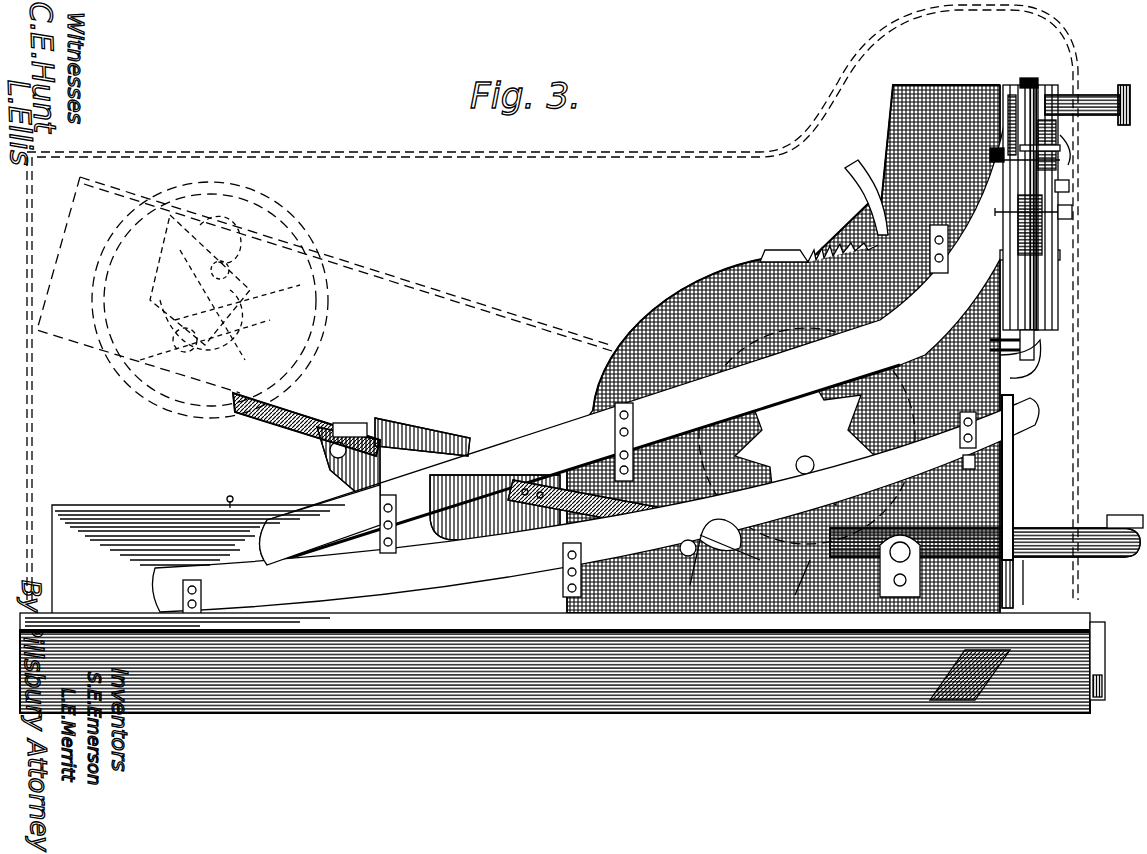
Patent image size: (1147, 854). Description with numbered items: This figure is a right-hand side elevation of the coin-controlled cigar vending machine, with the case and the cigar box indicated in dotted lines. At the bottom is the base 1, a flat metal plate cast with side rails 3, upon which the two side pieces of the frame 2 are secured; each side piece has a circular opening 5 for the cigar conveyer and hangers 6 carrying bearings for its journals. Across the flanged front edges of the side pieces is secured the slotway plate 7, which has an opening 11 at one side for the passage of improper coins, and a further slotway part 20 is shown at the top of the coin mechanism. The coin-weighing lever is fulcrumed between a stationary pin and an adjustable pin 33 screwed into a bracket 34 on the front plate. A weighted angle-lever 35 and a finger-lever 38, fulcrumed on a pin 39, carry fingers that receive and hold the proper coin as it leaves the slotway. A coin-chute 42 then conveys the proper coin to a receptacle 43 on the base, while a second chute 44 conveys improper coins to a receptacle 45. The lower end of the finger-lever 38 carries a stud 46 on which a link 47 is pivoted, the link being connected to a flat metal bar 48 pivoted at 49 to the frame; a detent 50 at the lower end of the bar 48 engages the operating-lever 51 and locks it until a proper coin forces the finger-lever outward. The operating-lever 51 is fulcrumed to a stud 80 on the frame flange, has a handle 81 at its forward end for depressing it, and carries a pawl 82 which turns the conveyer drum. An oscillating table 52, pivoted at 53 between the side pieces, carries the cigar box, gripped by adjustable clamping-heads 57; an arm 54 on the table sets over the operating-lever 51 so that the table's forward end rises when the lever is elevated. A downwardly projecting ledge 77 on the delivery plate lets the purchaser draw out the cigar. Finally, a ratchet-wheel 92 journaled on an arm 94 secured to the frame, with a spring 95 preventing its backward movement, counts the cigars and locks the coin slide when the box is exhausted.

The base 1 is at (1050, 614).
The frame 2 is at (705, 285).
The side rails 3 is at (555, 671).
The circular opening 5 is at (795, 595).
The hangers 6 is at (807, 436).
The plate 7 is at (1012, 90).
The opening 11 is at (805, 436).
The shaft 20 is at (1080, 105).
The adjustable pin 33 is at (1070, 187).
The bracket 34 is at (1060, 152).
The angle-lever 35 is at (735, 530).
The finger-lever 38 is at (1030, 275).
The pin 39 is at (1072, 213).
The coin-chute 42 is at (595, 507).
The receptacle 43 is at (170, 522).
The chute 44 is at (650, 342).
The receptacle 45 is at (262, 530).
The stud 46 is at (1034, 348).
The link 47 is at (1030, 372).
The flat metal bar 48 is at (1005, 257).
The pivot 49 is at (1004, 160).
The detent 50 is at (1013, 578).
The operating-lever 51 is at (1040, 540).
The oscillating table 52 is at (305, 425).
The pivot 53 is at (360, 428).
The arm 54 is at (543, 507).
The adjustable clamping-heads 57 is at (422, 440).
The ledge 77 is at (1100, 634).
The stud 80 is at (900, 566).
The handle 81 is at (1128, 520).
The pawl 82 is at (690, 585).
The ratchet-wheel 92 is at (838, 222).
The arm 94 is at (785, 252).
The spring 95 is at (860, 185).